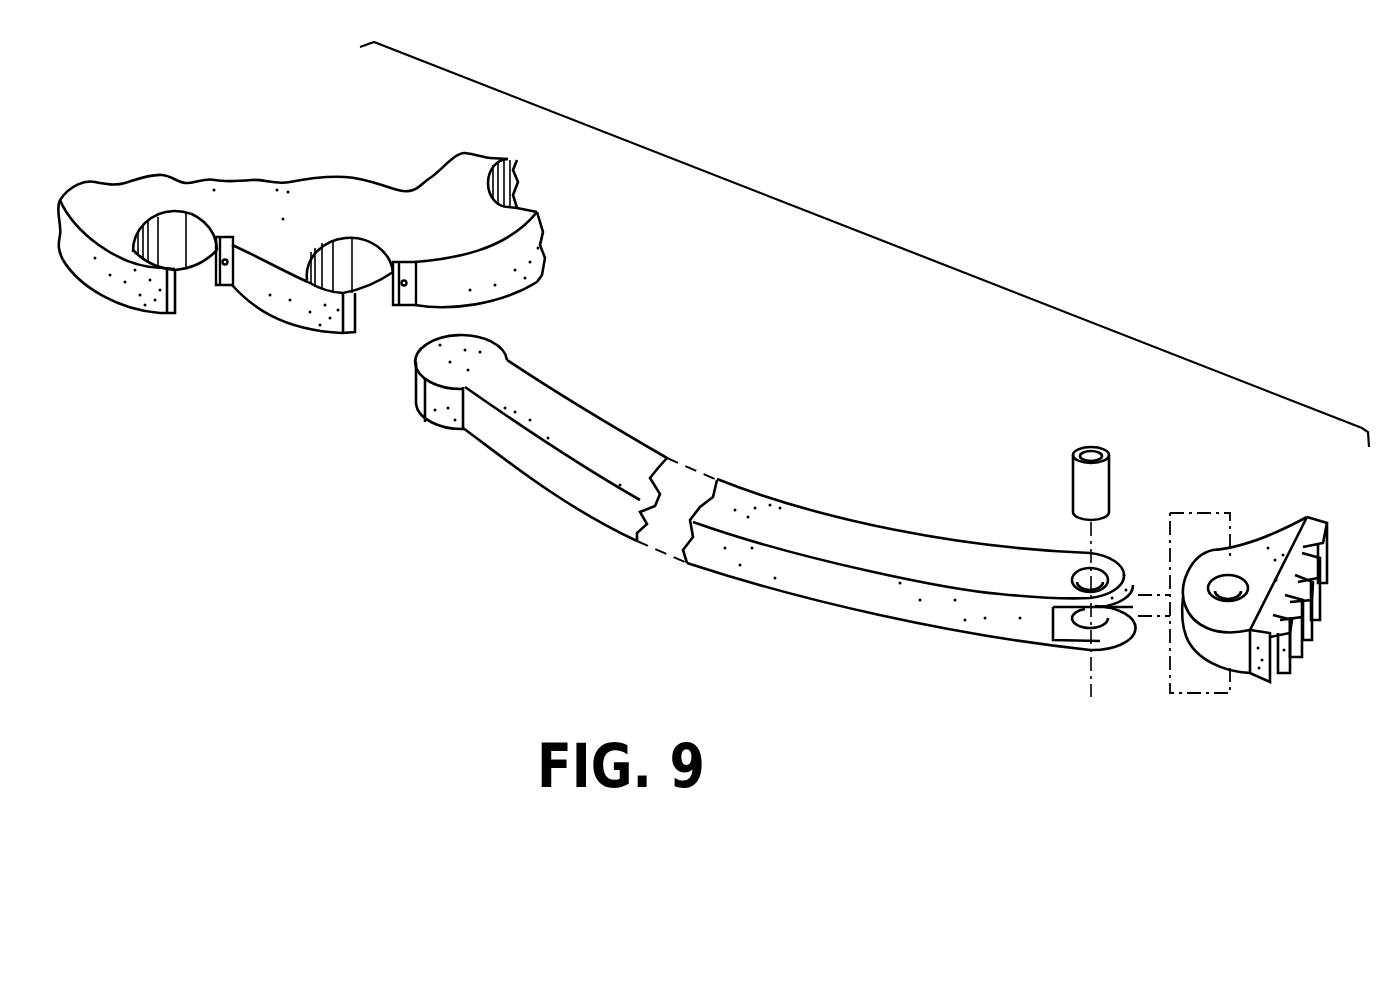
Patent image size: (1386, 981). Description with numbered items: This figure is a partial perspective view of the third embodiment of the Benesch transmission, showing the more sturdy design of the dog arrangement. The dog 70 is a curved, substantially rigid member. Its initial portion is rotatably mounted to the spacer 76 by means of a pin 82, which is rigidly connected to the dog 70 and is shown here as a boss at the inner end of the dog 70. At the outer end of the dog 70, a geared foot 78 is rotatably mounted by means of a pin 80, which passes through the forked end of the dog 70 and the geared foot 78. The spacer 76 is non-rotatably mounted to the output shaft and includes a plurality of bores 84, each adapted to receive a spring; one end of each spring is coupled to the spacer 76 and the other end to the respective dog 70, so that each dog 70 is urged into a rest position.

The dog 70 is at (796, 521).
The spacer 76 is at (465, 240).
The geared foot 78 is at (1260, 558).
The pin 80 is at (1072, 470).
The pin 82 is at (456, 360).
The bore 84 is at (222, 286).